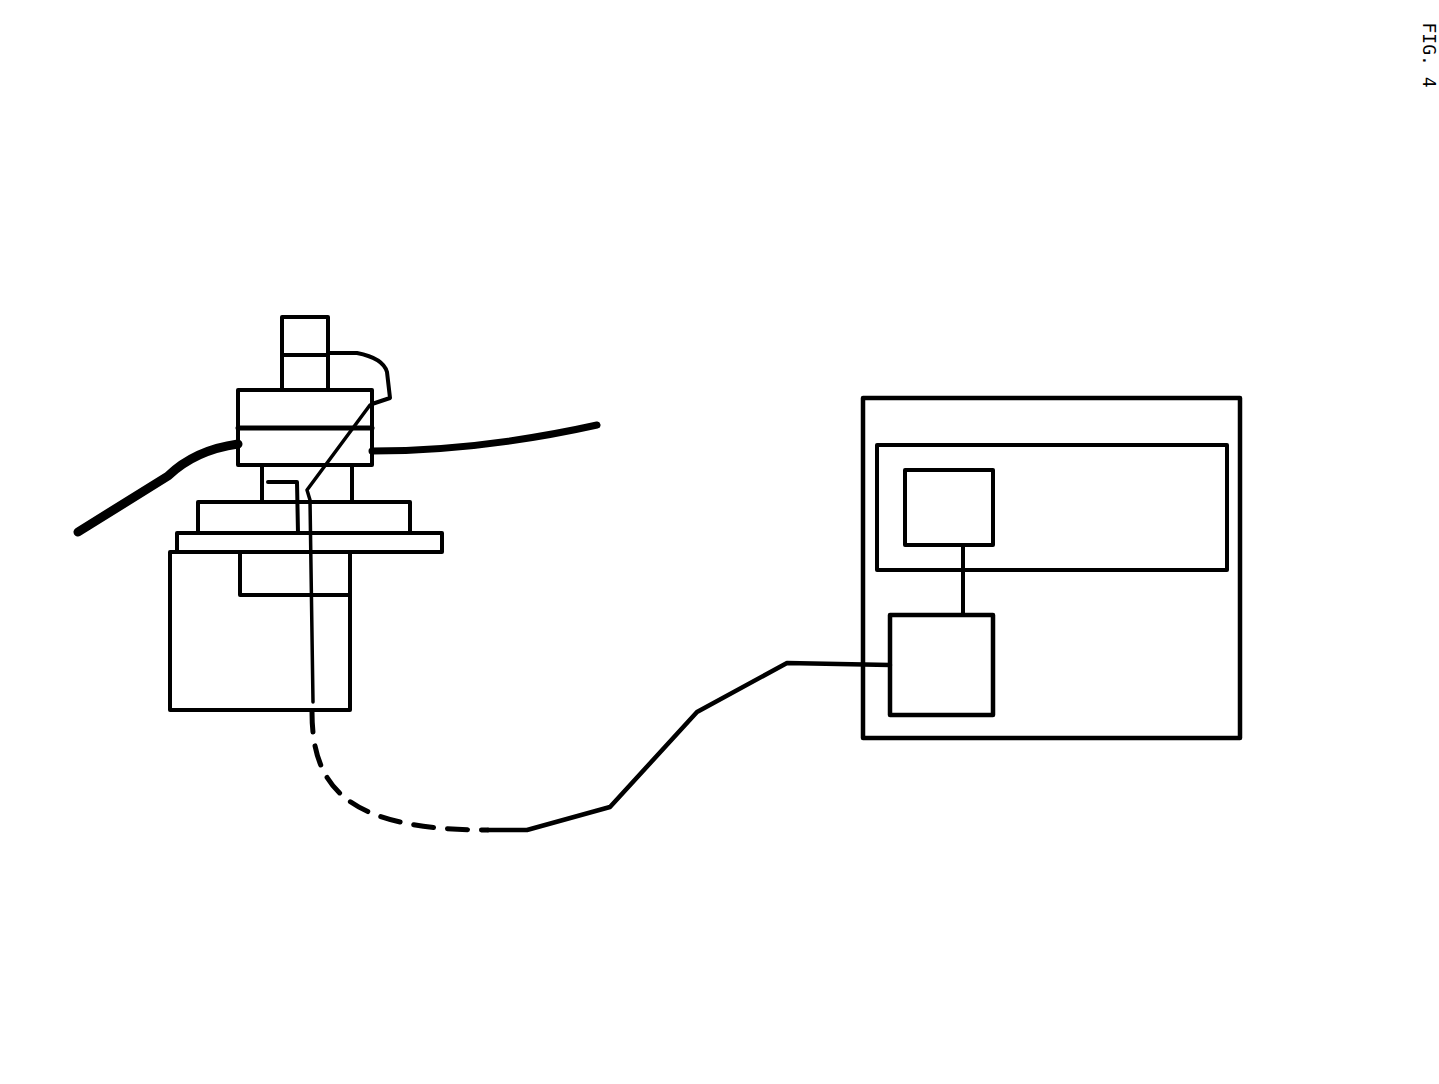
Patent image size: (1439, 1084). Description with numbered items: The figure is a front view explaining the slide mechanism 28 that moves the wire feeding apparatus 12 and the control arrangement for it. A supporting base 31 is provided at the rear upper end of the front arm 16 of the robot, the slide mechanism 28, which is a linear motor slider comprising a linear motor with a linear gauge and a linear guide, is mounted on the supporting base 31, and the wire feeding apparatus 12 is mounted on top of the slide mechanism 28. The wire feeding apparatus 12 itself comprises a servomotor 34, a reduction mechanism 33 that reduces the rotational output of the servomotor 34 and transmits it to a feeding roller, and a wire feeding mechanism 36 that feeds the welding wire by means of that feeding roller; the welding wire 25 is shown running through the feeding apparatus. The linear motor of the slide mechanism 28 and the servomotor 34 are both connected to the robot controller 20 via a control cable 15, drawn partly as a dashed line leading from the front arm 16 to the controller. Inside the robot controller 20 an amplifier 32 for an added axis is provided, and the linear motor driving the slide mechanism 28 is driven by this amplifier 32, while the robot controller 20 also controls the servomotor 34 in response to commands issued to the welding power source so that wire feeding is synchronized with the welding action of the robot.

The wire feeding apparatus 12 is at (245, 300).
The servomotor 34 is at (322, 345).
The reduction mechanism 33 is at (355, 400).
The wire feeding mechanism 36 is at (368, 438).
The workpiece surface 25 is at (195, 448).
The slide mechanism 28 is at (328, 478).
The supporting base 31 is at (363, 518).
The front arm 16 is at (325, 685).
The control cable 15 is at (663, 760).
The robot controller 20 is at (975, 412).
The amplifier for an added axis 32 is at (980, 678).